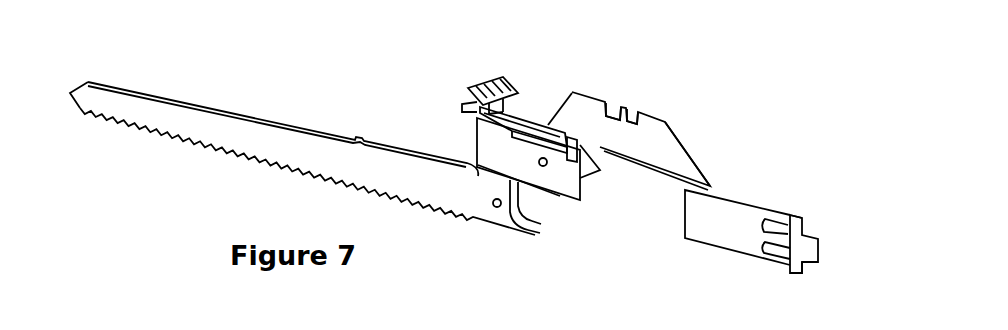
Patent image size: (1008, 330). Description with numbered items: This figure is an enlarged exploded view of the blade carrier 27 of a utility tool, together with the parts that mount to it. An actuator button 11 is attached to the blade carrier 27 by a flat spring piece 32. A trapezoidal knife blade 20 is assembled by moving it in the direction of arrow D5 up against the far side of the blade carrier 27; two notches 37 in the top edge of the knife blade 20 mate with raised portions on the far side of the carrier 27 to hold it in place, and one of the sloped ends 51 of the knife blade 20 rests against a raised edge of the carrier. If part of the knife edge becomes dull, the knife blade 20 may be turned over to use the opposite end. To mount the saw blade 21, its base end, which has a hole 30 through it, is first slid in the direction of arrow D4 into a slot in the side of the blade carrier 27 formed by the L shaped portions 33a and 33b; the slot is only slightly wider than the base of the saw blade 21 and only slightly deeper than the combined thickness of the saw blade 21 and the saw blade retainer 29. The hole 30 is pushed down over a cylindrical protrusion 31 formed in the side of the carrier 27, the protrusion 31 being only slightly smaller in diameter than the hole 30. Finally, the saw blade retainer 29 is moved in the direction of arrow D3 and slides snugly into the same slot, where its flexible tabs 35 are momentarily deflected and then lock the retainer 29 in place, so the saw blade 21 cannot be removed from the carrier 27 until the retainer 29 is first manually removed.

The actuator button 11 is at (471, 75).
The knife blade 20 is at (646, 133).
The saw blade 21 is at (184, 124).
The blade carrier 27 is at (538, 159).
The saw blade retainer 29 is at (751, 231).
The hole 30 is at (498, 210).
The cylindrical protrusion 31 is at (544, 169).
The flat spring piece 32 is at (533, 115).
The L shaped portion 33a is at (558, 136).
The L shaped portion 33b is at (561, 212).
The flexible tabs 35 is at (793, 207).
The notches 37 is at (612, 99).
The sloped end 51 is at (698, 154).
The arrow D3 is at (675, 212).
The arrow D4 is at (472, 148).
The arrow D5 is at (637, 92).